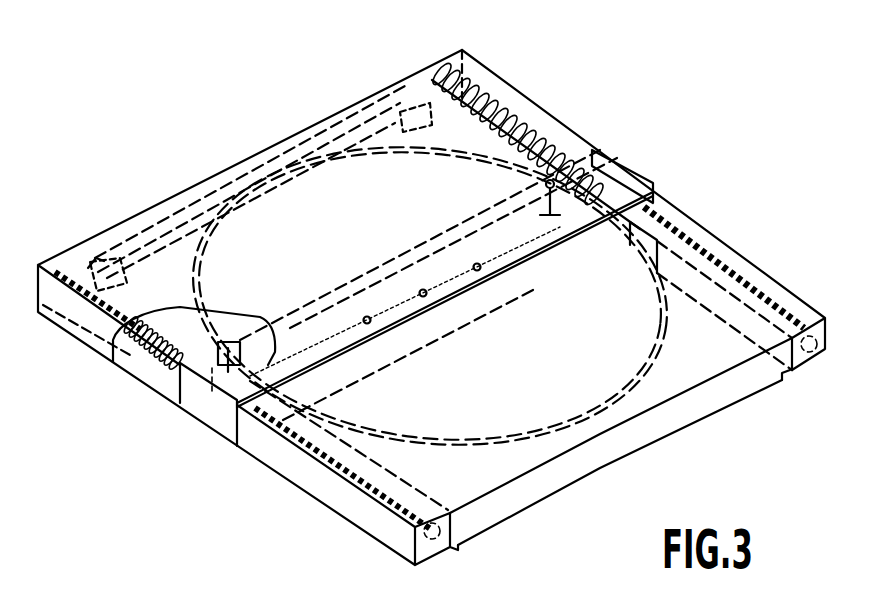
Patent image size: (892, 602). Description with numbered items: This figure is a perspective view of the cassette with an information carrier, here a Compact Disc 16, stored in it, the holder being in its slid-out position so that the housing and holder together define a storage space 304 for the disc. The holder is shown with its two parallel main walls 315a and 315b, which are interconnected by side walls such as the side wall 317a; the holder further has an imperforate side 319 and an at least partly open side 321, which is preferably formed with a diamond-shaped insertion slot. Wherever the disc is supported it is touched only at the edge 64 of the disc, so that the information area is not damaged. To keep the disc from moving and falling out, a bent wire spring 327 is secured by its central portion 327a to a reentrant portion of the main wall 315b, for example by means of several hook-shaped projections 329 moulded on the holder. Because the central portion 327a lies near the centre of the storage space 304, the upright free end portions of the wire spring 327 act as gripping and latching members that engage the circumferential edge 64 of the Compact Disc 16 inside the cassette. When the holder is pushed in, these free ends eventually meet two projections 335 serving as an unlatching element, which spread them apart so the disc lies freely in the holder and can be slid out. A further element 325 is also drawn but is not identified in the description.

The Compact Disc 16 is at (583, 395).
The edge of the disc 64 is at (625, 395).
The storage space 304 is at (693, 370).
The main wall 315a is at (757, 277).
The main wall 315b is at (573, 483).
The side wall 317a is at (330, 493).
The imperforate side 319 is at (747, 380).
The at least partly open side 321 is at (443, 238).
The ball bearings 325 is at (293, 450).
The bent wire spring 327 is at (498, 232).
The central portion 327a is at (405, 330).
The hook-shaped projections 329 is at (507, 277).
The projections 335 is at (93, 258).